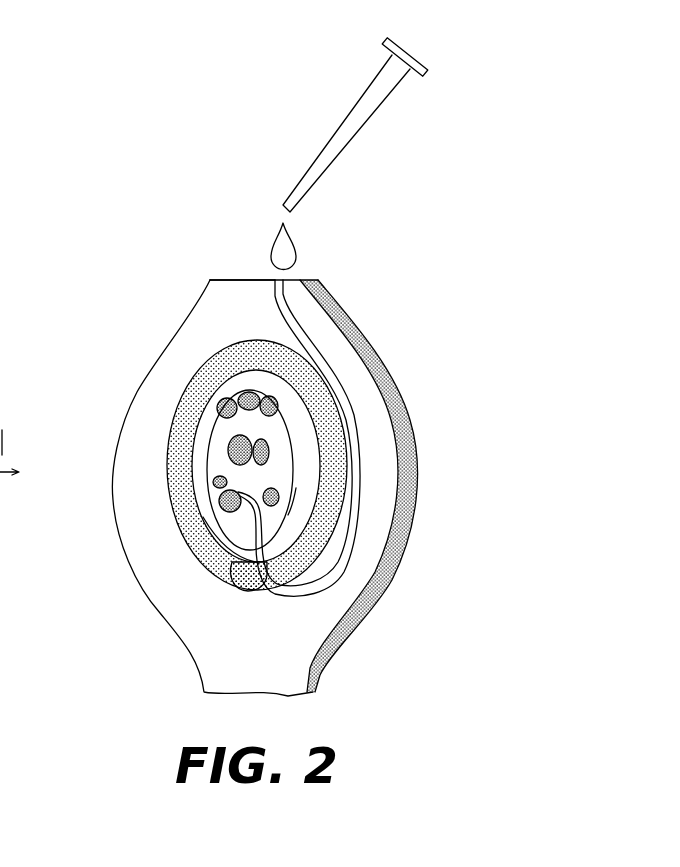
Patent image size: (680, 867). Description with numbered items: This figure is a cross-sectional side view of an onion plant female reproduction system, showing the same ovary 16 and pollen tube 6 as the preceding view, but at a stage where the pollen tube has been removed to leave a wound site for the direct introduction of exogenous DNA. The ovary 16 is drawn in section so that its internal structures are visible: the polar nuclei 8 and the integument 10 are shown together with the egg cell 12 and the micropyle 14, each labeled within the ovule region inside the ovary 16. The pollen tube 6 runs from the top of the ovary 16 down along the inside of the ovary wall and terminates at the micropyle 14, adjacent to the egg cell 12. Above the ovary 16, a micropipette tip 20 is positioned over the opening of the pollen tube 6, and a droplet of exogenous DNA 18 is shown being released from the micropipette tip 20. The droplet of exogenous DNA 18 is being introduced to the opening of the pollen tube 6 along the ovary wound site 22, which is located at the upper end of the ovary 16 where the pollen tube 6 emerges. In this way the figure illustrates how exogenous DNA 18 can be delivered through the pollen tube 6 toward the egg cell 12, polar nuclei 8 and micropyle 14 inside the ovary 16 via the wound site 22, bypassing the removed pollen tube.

The pollen tube 6 is at (285, 312).
The polar nuclei 8 is at (238, 437).
The integument 10 is at (303, 458).
The egg cell 12 is at (258, 481).
The micropyle 14 is at (268, 553).
The ovary 16 is at (338, 575).
The exogenous DNA 18 is at (283, 247).
The micropipette tip 20 is at (310, 177).
The ovary wound site 22 is at (235, 278).